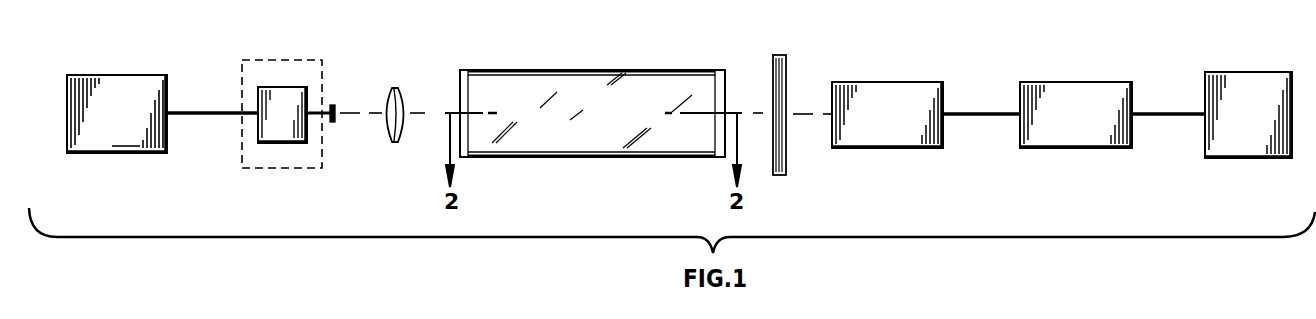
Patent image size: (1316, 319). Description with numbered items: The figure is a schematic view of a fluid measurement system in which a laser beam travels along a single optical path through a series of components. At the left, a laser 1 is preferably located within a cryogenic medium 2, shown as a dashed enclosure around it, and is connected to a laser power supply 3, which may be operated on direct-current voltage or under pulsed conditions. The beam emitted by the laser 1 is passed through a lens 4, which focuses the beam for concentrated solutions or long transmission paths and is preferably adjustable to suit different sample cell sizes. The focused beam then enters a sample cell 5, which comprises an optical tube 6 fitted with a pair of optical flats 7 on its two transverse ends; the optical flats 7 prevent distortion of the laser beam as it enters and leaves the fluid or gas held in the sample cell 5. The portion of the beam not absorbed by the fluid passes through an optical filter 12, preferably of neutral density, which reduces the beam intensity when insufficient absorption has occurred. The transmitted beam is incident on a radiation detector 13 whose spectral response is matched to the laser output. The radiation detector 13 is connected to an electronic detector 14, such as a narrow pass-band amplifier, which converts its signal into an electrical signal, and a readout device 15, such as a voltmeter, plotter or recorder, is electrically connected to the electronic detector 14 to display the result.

The laser 1 is at (278, 131).
The cryogenic medium 2 is at (316, 168).
The laser power supply 3 is at (147, 153).
The lens 4 is at (390, 143).
The sample cell 5 is at (580, 66).
The optical tube 6 is at (645, 153).
The optical flats 7 is at (460, 78).
The optical filter 12 is at (787, 80).
The radiation detector 13 is at (897, 82).
The electronic detector 14 is at (1097, 82).
The readout device 15 is at (1255, 72).